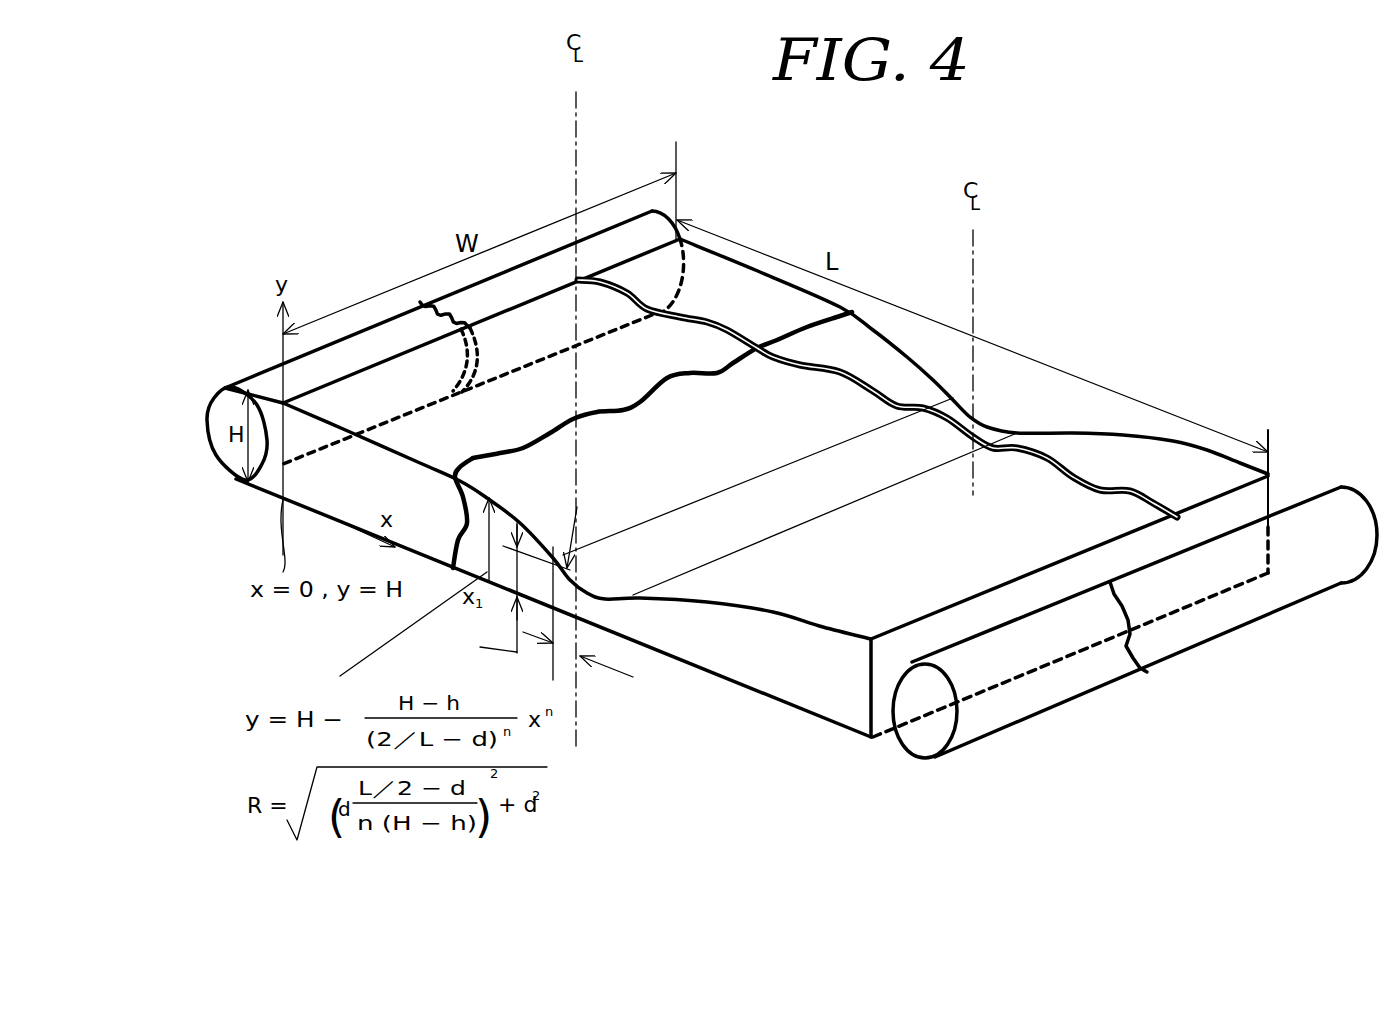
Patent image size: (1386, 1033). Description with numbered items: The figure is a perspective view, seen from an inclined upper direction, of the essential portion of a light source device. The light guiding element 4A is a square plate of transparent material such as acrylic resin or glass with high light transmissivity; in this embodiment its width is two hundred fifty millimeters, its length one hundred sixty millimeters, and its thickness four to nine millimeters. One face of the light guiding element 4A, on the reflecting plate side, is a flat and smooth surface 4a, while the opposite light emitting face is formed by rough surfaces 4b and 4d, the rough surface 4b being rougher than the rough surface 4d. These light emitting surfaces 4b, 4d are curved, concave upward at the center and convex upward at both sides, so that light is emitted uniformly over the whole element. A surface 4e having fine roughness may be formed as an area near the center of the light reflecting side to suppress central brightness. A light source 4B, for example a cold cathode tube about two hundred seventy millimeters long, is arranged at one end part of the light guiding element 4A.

The light guiding element 4A is at (1173, 453).
The light source 4B is at (207, 435).
The smooth surface 4a is at (783, 699).
The rough surface 4b is at (783, 613).
The rough surface 4d is at (600, 587).
The surface having fine roughness 4e is at (885, 720).